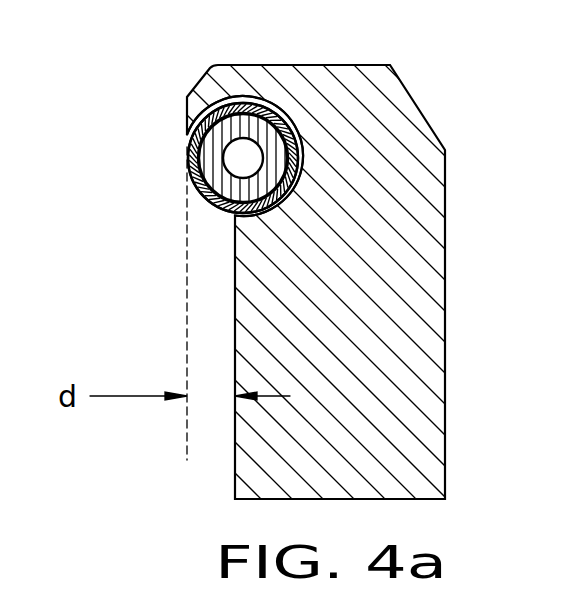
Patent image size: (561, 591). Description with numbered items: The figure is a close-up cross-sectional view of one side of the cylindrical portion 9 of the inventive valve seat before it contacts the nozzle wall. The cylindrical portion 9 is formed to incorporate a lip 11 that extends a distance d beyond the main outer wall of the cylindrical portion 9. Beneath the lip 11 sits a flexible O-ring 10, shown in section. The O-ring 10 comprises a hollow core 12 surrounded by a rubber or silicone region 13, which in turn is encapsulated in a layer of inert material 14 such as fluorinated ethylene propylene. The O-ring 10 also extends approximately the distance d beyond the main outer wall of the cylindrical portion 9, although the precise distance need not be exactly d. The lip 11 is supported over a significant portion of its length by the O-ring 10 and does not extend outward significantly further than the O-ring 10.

The cylindrical portion 9 is at (408, 106).
The O-ring 10 is at (186, 146).
The lip 11 is at (210, 93).
The hollow core 12 is at (240, 165).
The rubber or silicone region 13 is at (217, 177).
The layer of inert material 14 is at (195, 166).